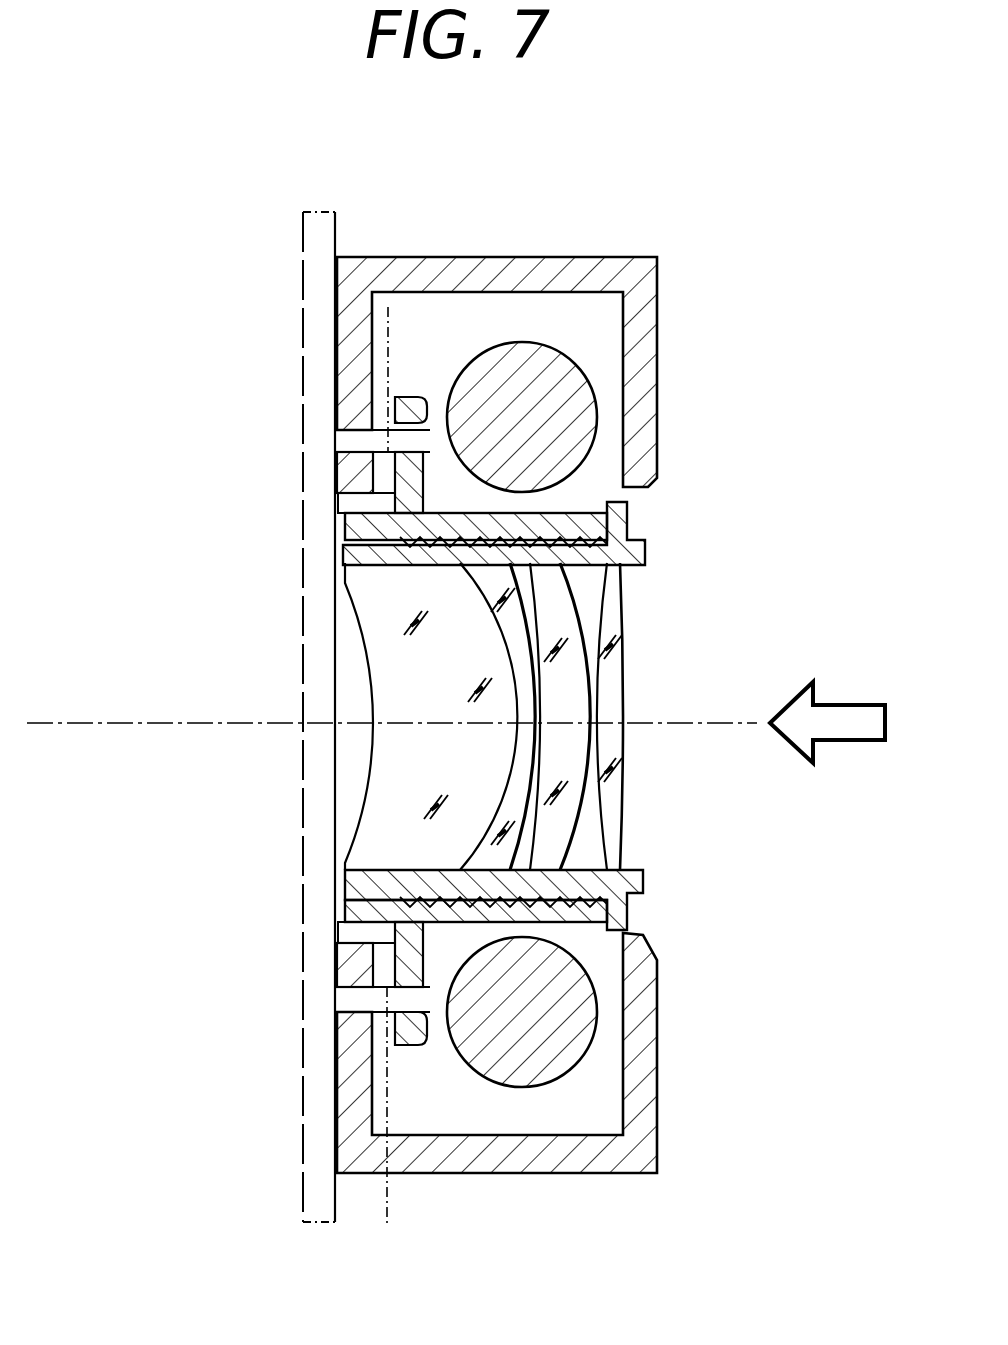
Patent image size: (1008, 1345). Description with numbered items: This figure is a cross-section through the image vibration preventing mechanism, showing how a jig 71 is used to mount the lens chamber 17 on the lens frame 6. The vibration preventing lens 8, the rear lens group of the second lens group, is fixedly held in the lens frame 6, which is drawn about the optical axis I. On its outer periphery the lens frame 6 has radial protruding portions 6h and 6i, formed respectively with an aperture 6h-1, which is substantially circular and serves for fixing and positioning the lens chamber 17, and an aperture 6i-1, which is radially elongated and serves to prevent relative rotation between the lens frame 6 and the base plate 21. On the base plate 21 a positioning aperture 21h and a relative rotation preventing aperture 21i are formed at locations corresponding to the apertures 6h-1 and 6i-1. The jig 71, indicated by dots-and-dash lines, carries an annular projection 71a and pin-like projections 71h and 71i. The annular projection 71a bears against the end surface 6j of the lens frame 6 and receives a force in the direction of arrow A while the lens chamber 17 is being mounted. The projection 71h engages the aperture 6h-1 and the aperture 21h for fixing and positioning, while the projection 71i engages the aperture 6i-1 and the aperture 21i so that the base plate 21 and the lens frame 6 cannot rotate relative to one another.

The lens frame 6 is at (434, 712).
The protruding portion 6h is at (418, 1047).
The aperture 6h-1 is at (440, 1008).
The protruding portion 6i is at (412, 396).
The aperture 6i-1 is at (440, 398).
The end surface 6j is at (340, 532).
The vibration preventing lens 8 is at (633, 667).
The lens chamber 17 is at (647, 550).
The base plate 21 is at (340, 341).
The positioning aperture 21h is at (340, 1000).
The relative rotation preventing aperture 21i is at (347, 438).
The jig 71 is at (320, 1095).
The annular projection 71a is at (340, 522).
The pin-like projection 71h is at (384, 1223).
The pin-like projection 71i is at (388, 275).
The optical axis I is at (93, 722).
The arrow A is at (852, 725).